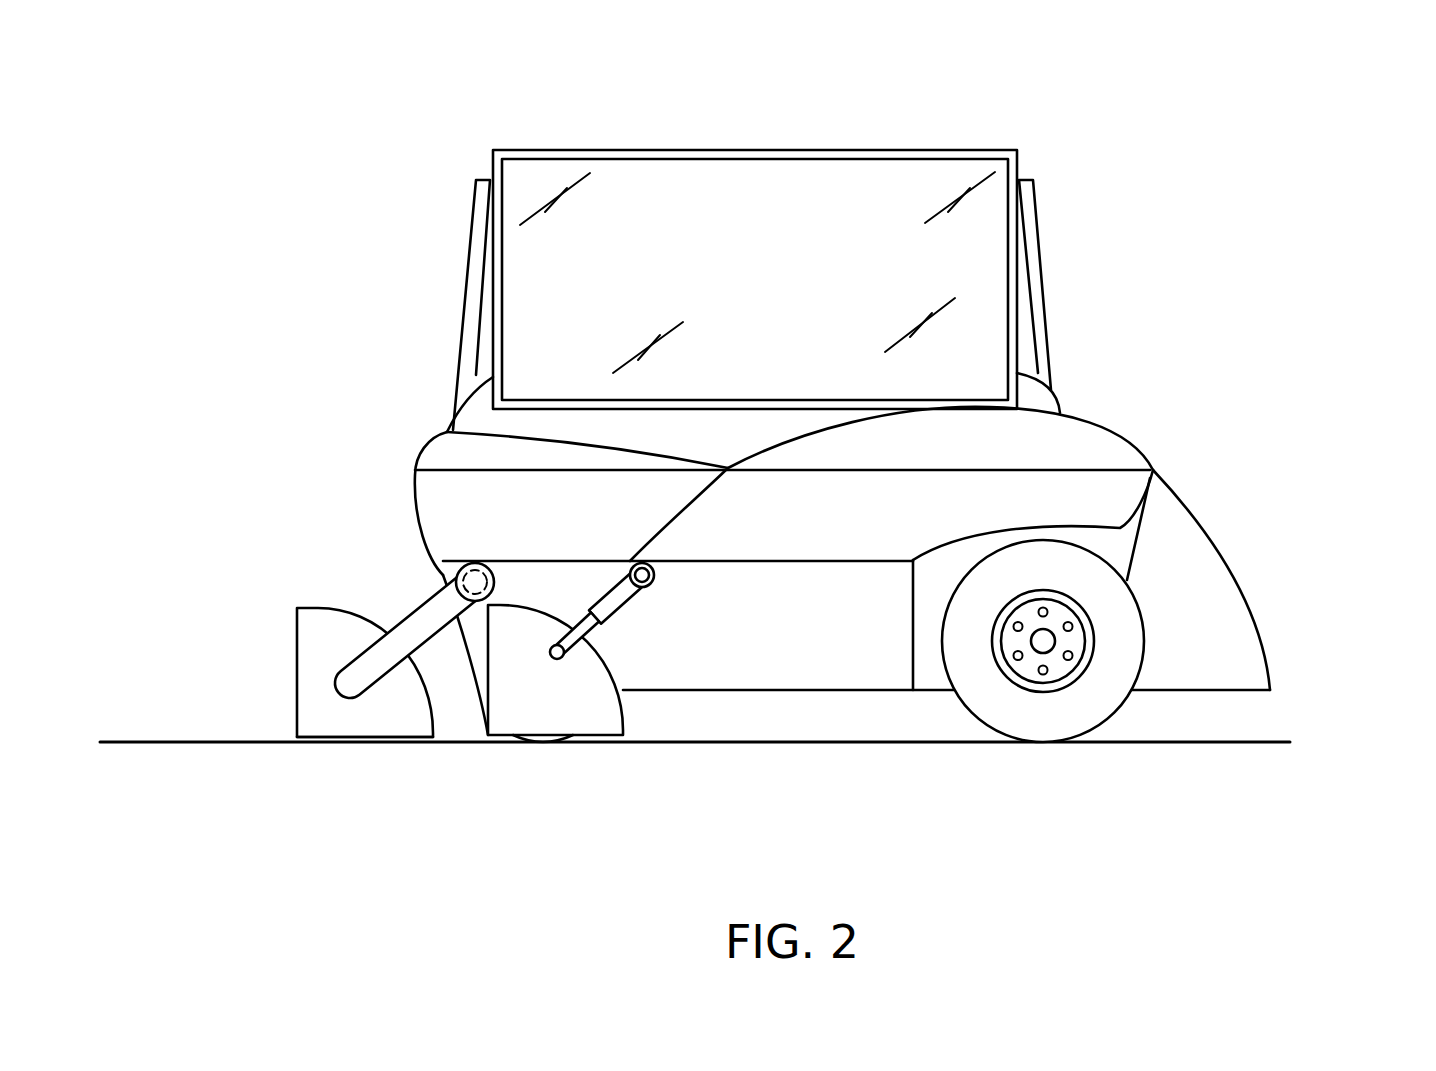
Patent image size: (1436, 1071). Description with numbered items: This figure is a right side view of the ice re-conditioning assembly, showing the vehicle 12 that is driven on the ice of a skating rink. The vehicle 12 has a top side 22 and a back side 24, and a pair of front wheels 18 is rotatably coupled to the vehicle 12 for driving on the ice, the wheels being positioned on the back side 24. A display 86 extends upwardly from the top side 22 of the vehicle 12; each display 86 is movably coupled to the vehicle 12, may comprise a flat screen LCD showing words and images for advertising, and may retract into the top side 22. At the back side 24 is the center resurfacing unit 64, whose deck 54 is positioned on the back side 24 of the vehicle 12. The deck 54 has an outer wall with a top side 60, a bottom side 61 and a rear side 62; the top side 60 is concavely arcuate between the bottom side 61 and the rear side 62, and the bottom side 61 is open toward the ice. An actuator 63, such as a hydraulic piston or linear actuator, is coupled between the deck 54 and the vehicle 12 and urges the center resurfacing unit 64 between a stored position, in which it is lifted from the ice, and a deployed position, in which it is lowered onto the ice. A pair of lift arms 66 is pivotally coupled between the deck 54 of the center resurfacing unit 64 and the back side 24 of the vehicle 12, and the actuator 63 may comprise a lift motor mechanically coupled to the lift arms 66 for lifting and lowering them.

The vehicle 12 is at (1130, 432).
The front wheels 18 is at (1117, 565).
The top side 22 is at (485, 378).
The back side 24 is at (417, 490).
The deck 54 is at (302, 710).
The top side 60 is at (355, 610).
The bottom side 61 is at (365, 737).
The rear side 62 is at (295, 643).
The actuator 63 is at (478, 600).
The center resurfacing unit 64 is at (262, 690).
The lift arms 66 is at (662, 724).
The displays 86 is at (1030, 180).